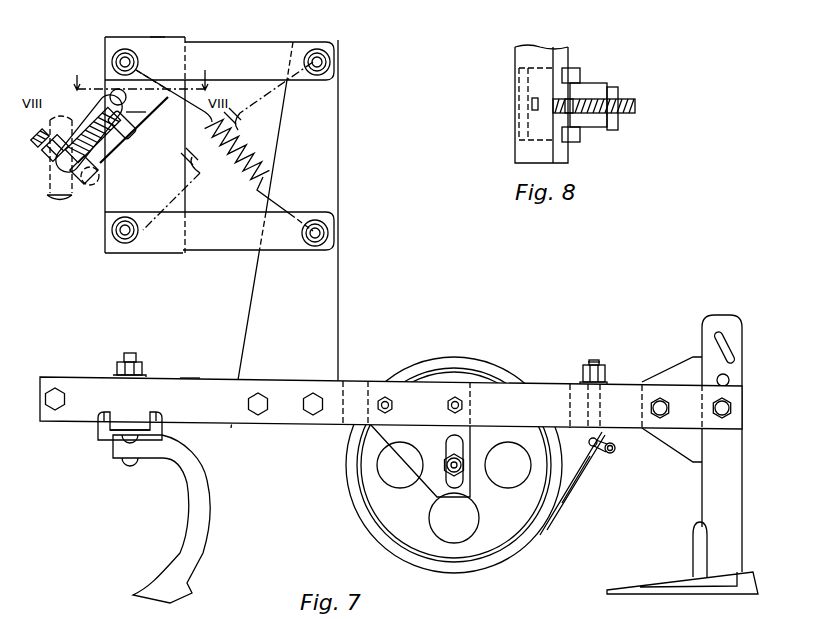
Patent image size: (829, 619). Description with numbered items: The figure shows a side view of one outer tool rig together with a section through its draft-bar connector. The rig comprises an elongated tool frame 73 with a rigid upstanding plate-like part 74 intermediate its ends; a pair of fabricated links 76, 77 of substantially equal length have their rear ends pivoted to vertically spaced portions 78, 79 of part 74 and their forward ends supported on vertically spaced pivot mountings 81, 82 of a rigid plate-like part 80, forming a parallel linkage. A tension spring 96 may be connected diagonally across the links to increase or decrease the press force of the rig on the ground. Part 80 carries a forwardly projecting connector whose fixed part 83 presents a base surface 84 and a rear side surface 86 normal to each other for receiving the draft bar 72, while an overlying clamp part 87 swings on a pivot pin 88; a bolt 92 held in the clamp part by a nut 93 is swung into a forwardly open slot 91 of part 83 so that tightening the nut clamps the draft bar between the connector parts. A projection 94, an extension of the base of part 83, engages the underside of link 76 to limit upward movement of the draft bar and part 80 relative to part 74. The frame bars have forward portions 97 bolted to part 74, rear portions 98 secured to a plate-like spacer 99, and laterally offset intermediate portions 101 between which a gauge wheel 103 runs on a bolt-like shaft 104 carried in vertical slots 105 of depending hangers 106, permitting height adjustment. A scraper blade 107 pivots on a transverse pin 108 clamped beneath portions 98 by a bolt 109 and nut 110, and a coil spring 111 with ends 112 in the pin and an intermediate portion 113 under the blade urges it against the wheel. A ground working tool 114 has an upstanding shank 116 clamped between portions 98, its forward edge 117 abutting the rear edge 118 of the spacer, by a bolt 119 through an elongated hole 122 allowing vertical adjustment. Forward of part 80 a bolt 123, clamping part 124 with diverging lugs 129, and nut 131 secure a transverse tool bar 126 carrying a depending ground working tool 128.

In FIG. 7, the draft bar 72 is at (60, 182).
In FIG. 8, the draft bar 72 is at (516, 50).
In FIG. 7, the tool frame 73 is at (222, 408).
In FIG. 7, the upstanding plate-like part 74 is at (338, 302).
In FIG. 7, the link 76 is at (258, 42).
In FIG. 7, the link 77 is at (222, 250).
In FIG. 7, the pivot portion 78 is at (332, 63).
In FIG. 7, the pivot portion 79 is at (332, 234).
In FIG. 7, the rigid plate-like part 80 is at (158, 37).
In FIG. 8, the rigid plate-like part 80 is at (636, 107).
In FIG. 7, the pivot mounting 81 is at (113, 58).
In FIG. 7, the pivot mounting 82 is at (112, 233).
In FIG. 7, the fixed connector part 83 is at (108, 154).
In FIG. 8, the fixed connector part 83 is at (575, 70).
In FIG. 7, the base surface 84 is at (100, 165).
In FIG. 7, the rear side surface 86 is at (125, 138).
In FIG. 7, the clamp part 87 is at (90, 118).
In FIG. 7, the pivot pin 88 is at (112, 93).
In FIG. 7, the slot 91 is at (92, 185).
In FIG. 8, the slot 91 is at (518, 118).
In FIG. 7, the bolt 92 is at (32, 137).
In FIG. 7, the nut 93 is at (45, 148).
In FIG. 7, the projection 94 is at (146, 118).
In FIG. 8, the projection 94 is at (605, 127).
In FIG. 7, the tension spring 96 is at (245, 172).
In FIG. 7, the forward frame portions 97 is at (190, 377).
In FIG. 7, the rear frame portions 98 is at (622, 386).
In FIG. 7, the plate-like spacer 99 is at (665, 370).
In FIG. 7, the intermediate frame portions 101 is at (540, 386).
In FIG. 7, the gauge wheel 103 is at (455, 356).
In FIG. 7, the bolt-like shaft 104 is at (465, 465).
In FIG. 7, the vertical slots 105 is at (446, 440).
In FIG. 7, the hangers 106 is at (415, 468).
In FIG. 7, the scraper blade 107 is at (560, 508).
In FIG. 7, the transverse pin 108 is at (600, 452).
In FIG. 7, the bolt 109 is at (597, 362).
In FIG. 7, the nut 110 is at (590, 363).
In FIG. 7, the coil spring 111 is at (615, 448).
In FIG. 7, the spring ends 112 is at (589, 442).
In FIG. 7, the intermediate spring portion 113 is at (580, 472).
In FIG. 7, the ground working tool 114 is at (640, 588).
In FIG. 7, the shank 116 is at (742, 500).
In FIG. 7, the forward edge 117 is at (702, 494).
In FIG. 7, the rear edge 118 is at (705, 455).
In FIG. 7, the bolt 119 is at (733, 408).
In FIG. 7, the elongated hole 122 is at (730, 380).
In FIG. 7, the bolt 123 is at (130, 353).
In FIG. 7, the clamping part 124 is at (103, 440).
In FIG. 7, the tool bar 126 is at (125, 429).
In FIG. 7, the ground working tool 128 is at (208, 492).
In FIG. 7, the lugs 129 is at (153, 414).
In FIG. 7, the nut 131 is at (117, 368).